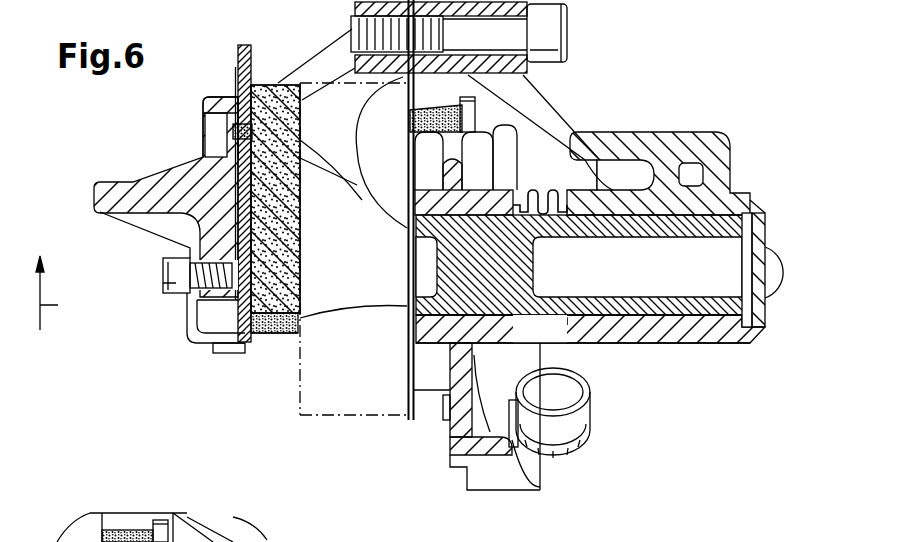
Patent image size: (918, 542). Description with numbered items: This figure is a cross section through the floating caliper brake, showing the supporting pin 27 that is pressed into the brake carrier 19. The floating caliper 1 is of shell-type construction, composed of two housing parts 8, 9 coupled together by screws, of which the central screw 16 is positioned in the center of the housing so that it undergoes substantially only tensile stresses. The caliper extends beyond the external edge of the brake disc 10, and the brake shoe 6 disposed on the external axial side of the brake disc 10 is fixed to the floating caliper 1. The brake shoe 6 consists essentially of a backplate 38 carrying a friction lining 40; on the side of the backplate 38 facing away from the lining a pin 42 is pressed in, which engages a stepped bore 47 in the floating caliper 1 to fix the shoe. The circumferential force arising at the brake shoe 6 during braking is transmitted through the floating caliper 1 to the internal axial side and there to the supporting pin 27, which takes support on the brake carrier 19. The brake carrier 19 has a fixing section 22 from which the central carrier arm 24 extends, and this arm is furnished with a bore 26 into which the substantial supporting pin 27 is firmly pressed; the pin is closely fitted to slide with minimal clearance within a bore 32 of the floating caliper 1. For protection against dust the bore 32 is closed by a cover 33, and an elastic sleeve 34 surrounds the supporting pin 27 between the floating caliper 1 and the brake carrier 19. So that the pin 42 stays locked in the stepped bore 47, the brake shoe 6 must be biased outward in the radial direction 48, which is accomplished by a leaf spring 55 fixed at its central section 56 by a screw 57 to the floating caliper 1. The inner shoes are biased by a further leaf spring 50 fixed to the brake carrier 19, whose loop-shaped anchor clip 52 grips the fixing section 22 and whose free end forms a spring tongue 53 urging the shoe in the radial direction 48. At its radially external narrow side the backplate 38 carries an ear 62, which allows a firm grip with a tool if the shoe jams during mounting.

The floating caliper 1 is at (122, 193).
The brake shoe 6 is at (266, 342).
The housing part 8 is at (328, 66).
The housing part 9 is at (550, 112).
The brake disc 10 is at (350, 397).
The screw 16 is at (567, 31).
The brake carrier 19 is at (443, 460).
The fixing section 22 is at (511, 470).
The central carrier arm 24 is at (497, 207).
The bore 26 is at (497, 343).
The supporting pin 27 is at (661, 344).
The bore 32 is at (712, 344).
The cover 33 is at (772, 212).
The elastic sleeve 34 is at (543, 342).
The backplate 38 is at (285, 273).
The friction lining 40 is at (285, 235).
The pin 42 is at (233, 132).
The stepped bore 47 is at (212, 118).
The radial direction 48 is at (60, 293).
The leaf spring 50 is at (596, 437).
The anchor clip 52 is at (567, 452).
The spring tongue 53 is at (587, 390).
The leaf spring 55 is at (183, 345).
The central section 56 is at (185, 305).
The screw 57 is at (175, 273).
The ear 62 is at (238, 62).